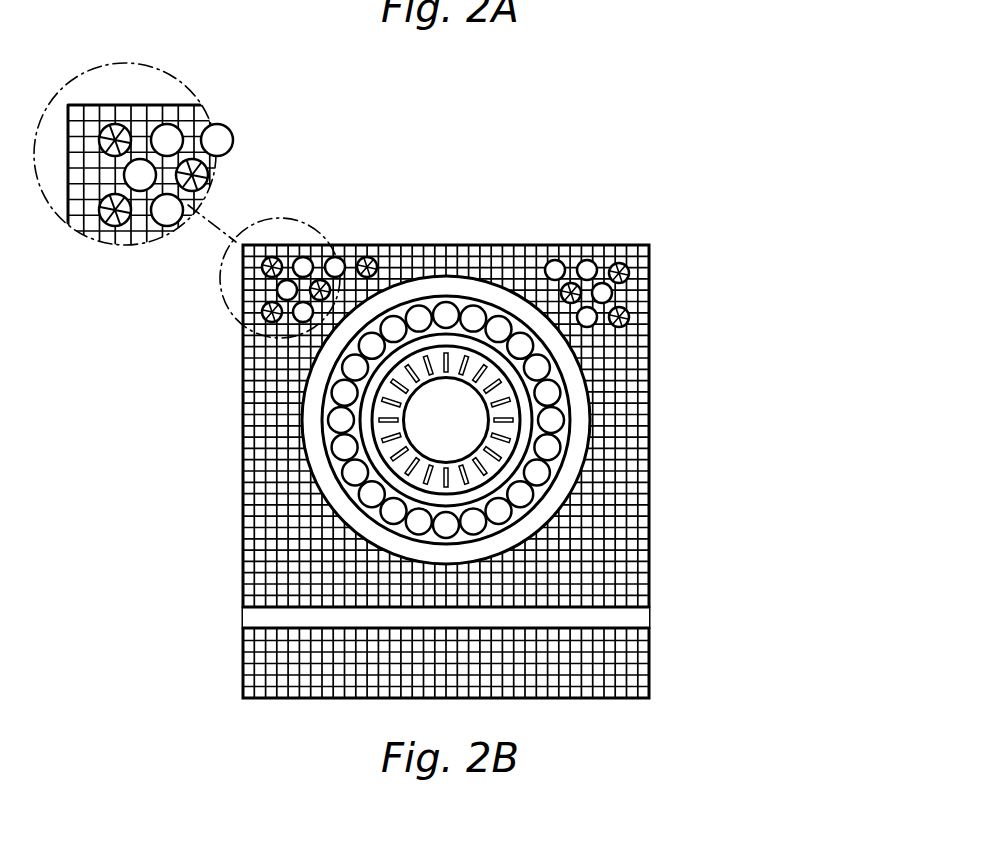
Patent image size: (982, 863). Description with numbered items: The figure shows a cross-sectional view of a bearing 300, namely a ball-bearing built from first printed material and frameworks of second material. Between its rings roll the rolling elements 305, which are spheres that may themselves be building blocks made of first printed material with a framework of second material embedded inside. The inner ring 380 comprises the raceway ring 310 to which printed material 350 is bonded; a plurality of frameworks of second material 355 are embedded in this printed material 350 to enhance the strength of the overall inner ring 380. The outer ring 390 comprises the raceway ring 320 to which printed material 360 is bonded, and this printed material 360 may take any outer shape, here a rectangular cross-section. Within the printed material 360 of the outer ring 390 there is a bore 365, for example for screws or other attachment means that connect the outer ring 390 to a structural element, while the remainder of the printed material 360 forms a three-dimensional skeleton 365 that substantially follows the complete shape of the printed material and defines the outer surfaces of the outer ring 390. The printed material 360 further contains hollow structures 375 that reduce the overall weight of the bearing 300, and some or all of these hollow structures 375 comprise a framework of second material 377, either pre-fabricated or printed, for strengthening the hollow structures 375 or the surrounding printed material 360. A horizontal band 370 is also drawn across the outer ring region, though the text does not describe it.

The bearing 300 is at (703, 132).
The rolling elements 305 is at (370, 495).
The raceway ring 310 is at (382, 373).
The raceway ring 320 is at (577, 373).
The printed material 350 is at (375, 408).
The frameworks of second material 355 is at (378, 448).
The printed material 360 is at (622, 408).
The bore 365 is at (617, 457).
The band 370 is at (633, 615).
The hollow structures 375 is at (168, 137).
The framework of second material 377 is at (111, 128).
The inner ring 380 is at (141, 333).
The outer ring 390 is at (765, 348).